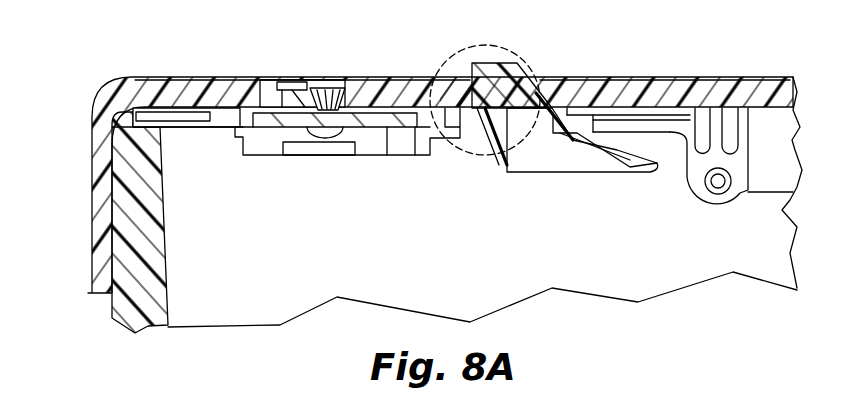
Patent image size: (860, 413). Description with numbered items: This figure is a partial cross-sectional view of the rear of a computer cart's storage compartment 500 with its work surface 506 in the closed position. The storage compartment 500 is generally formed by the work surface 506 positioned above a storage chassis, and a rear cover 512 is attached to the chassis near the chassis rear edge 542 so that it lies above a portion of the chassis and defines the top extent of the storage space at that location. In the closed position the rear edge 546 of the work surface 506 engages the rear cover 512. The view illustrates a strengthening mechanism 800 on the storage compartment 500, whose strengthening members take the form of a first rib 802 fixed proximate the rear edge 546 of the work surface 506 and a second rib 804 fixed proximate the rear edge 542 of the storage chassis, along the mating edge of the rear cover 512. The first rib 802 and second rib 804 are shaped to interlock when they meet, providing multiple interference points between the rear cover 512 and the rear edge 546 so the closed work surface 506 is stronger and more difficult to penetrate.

The storage compartment 500 is at (540, 331).
The work surface 506 is at (298, 242).
The rear cover 512 is at (100, 185).
The rear edge 542 is at (123, 243).
The rear edge 546 is at (605, 85).
The strengthening mechanism 800 is at (478, 42).
The first rib 802 is at (522, 62).
The second rib 804 is at (465, 82).